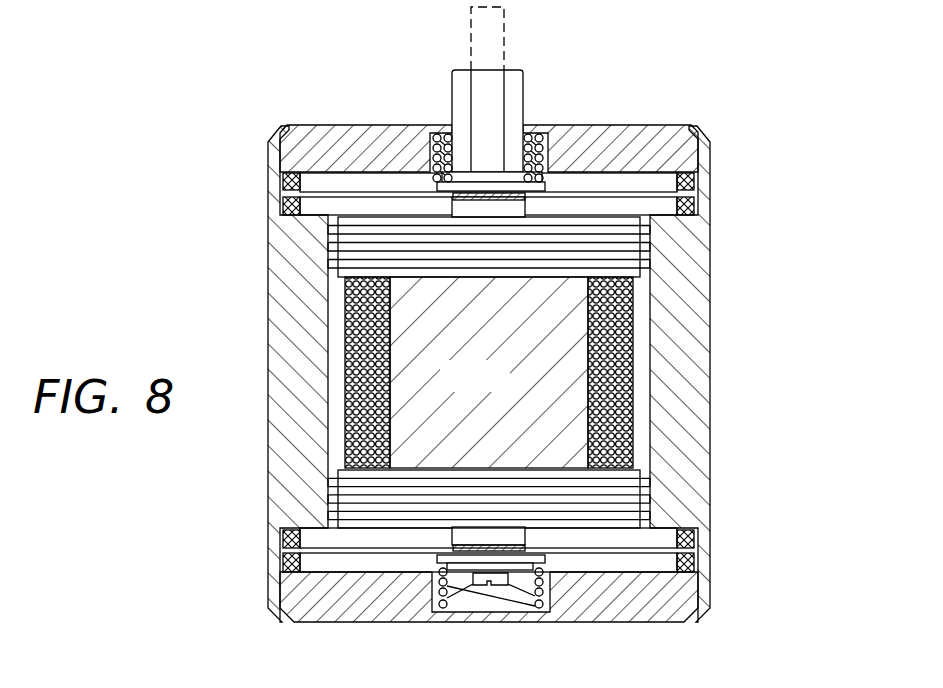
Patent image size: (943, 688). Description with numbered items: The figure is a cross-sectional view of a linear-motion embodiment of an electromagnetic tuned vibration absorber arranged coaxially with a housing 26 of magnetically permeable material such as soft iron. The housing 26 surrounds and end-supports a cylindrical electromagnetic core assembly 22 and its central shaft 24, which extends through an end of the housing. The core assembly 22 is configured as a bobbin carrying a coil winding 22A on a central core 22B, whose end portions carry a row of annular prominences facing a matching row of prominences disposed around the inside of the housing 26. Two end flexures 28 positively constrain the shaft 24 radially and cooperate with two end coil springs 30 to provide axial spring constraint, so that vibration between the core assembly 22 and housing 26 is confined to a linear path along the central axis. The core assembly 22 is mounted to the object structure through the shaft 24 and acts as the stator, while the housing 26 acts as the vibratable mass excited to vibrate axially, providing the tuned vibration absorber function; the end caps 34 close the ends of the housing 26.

The electromagnetic core assembly 22 is at (578, 446).
The coil winding 22A is at (620, 310).
The central core 22B is at (498, 390).
The central shaft 24 is at (491, 78).
The housing 26 is at (697, 483).
The end flexure 28 is at (648, 190).
The end coil spring 30 is at (540, 147).
The end cap 34 is at (320, 142).